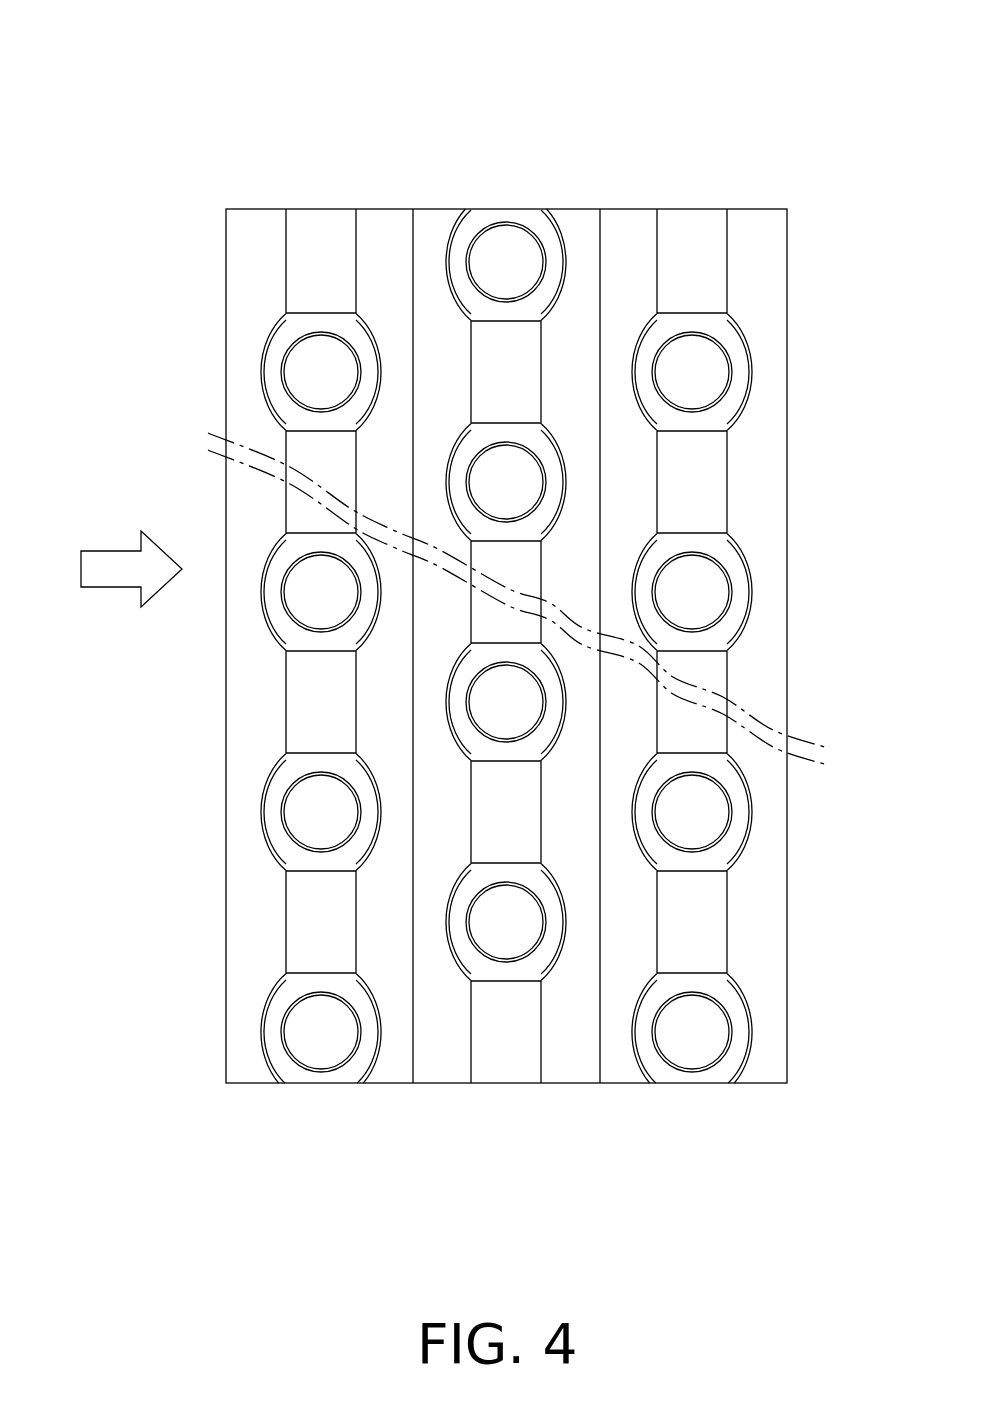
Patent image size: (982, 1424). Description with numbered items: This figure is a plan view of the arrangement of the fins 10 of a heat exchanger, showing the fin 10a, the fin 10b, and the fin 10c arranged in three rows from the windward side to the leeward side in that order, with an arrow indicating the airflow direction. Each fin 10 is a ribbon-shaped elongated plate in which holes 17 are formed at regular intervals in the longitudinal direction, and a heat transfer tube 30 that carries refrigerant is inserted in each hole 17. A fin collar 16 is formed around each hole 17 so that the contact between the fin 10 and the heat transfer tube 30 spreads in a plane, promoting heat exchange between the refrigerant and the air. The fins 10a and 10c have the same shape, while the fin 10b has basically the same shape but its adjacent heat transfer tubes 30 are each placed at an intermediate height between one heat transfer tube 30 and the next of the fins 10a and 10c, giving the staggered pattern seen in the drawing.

The fin 10 is at (702, 78).
The fin 10a is at (320, 209).
The fin 10b is at (504, 209).
The fin 10c is at (692, 209).
The fin collar 16 is at (287, 348).
The hole 17 is at (317, 380).
The heat transfer tube 30 is at (223, 372).